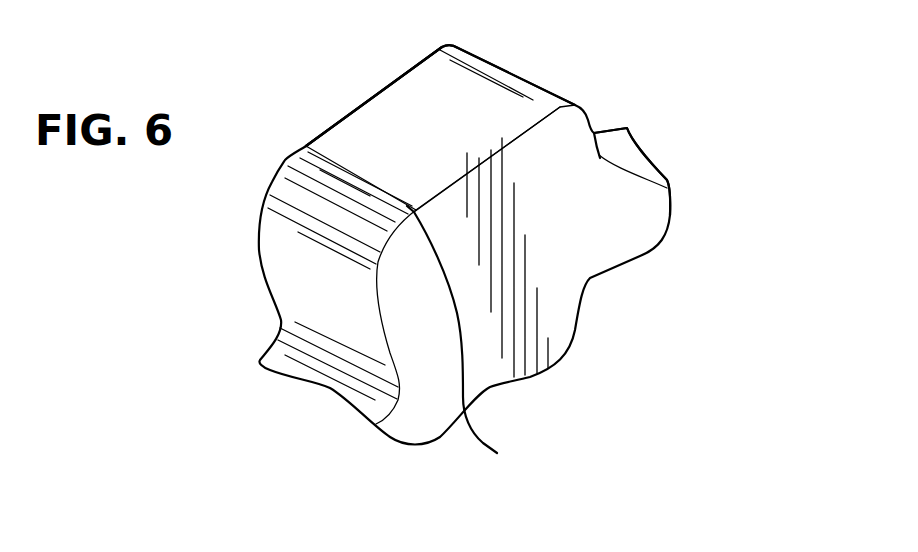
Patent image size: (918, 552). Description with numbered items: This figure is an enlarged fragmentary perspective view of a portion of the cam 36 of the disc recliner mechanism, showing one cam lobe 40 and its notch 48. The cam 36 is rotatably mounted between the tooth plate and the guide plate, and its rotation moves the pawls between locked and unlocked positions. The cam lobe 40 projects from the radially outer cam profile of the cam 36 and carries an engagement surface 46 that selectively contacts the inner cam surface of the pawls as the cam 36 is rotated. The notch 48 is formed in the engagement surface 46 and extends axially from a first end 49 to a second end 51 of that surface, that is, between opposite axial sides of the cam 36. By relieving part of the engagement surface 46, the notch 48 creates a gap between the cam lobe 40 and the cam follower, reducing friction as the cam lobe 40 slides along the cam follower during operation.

The cam 36 is at (601, 330).
The cam lobe 40 is at (565, 164).
The engagement surface 46 is at (453, 133).
The notch 48 is at (477, 303).
The first end 49 is at (347, 110).
The second end 51 is at (520, 127).